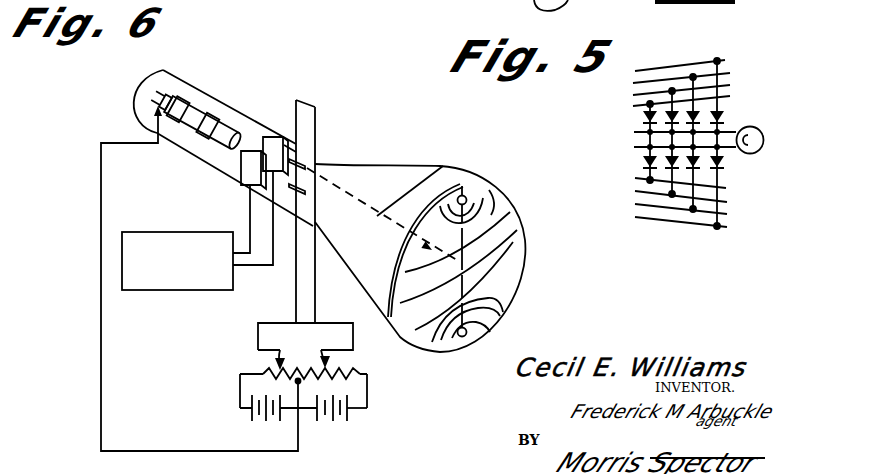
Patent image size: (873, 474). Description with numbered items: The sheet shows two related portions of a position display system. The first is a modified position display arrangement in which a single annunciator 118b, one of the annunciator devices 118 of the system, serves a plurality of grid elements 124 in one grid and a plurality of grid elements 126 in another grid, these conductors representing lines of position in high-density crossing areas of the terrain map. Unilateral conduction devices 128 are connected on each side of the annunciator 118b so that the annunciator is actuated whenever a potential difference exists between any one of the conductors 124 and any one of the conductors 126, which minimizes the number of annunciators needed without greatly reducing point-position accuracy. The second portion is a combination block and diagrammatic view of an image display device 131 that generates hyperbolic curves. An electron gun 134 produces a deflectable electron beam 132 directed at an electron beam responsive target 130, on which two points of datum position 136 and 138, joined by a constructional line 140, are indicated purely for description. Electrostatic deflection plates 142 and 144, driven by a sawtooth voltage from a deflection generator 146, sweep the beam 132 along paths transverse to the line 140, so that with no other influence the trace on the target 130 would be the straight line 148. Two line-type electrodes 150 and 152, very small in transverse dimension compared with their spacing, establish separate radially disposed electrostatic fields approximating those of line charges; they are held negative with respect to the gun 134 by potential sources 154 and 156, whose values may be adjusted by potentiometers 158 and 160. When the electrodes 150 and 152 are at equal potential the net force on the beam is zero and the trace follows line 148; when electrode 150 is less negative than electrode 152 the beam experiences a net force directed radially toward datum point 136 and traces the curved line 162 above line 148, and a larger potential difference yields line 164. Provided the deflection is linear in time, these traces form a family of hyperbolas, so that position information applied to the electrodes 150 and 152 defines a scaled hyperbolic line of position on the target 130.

In FIG. 6, the electron beam responsive target 130 is at (507, 197).
In FIG. 6, the display device 131 is at (427, 146).
In FIG. 6, the electron beam 132 is at (444, 167).
In FIG. 6, the electron gun 134 is at (231, 130).
In FIG. 6, the point of datum position 136 is at (465, 197).
In FIG. 6, the point of datum position 138 is at (463, 338).
In FIG. 6, the line connecting the points of datum position 140 is at (500, 313).
In FIG. 6, the electrostatic deflection plate 142 is at (270, 137).
In FIG. 6, the electrostatic deflection plate 144 is at (243, 167).
In FIG. 6, the deflection generator 146 is at (197, 292).
In FIG. 6, the straight line 148 is at (509, 250).
In FIG. 6, the line-type electrode 150 is at (300, 162).
In FIG. 6, the line-type electrode 152 is at (304, 188).
In FIG. 6, the potential source 154 is at (246, 422).
In FIG. 6, the potential source 156 is at (368, 432).
In FIG. 6, the potentiometer 158 is at (305, 235).
In FIG. 6, the potentiometer 160 is at (328, 363).
In FIG. 6, the line 162 is at (512, 228).
In FIG. 6, the line 164 is at (509, 210).
In FIG. 5, the lamp 118 is at (611, 16).
In FIG. 5, the annunciator 118b is at (763, 146).
In FIG. 5, the grid elements 124 is at (722, 55).
In FIG. 5, the grid elements 126 is at (651, 238).
In FIG. 5, the unilateral conduction devices 128 is at (672, 113).